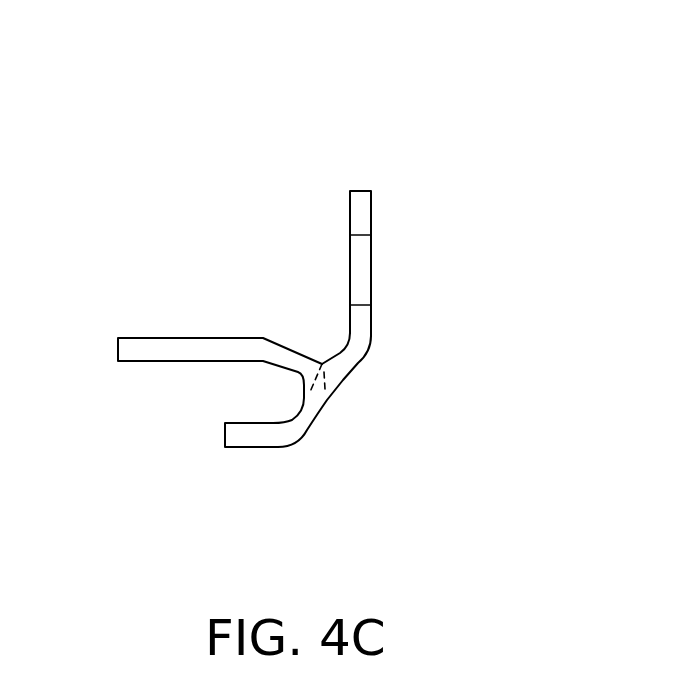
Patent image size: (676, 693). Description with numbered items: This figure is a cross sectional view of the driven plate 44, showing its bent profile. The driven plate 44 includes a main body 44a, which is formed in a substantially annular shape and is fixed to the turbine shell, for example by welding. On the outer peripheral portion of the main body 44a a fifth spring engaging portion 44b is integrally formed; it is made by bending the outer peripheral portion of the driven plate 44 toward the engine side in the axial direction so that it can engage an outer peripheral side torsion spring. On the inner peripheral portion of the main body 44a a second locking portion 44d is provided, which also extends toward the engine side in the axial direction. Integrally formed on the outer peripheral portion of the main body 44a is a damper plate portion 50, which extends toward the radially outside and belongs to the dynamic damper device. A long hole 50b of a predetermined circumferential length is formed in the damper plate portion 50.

The driven plate 44 is at (414, 144).
The main body 44a is at (343, 413).
The fifth spring engaging portion 44b is at (138, 338).
The second locking portion 44d is at (235, 440).
The damper plate portion 50 is at (338, 221).
The long hole 50b is at (360, 237).